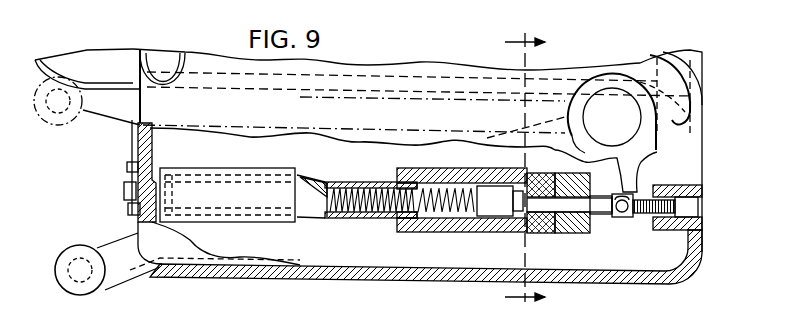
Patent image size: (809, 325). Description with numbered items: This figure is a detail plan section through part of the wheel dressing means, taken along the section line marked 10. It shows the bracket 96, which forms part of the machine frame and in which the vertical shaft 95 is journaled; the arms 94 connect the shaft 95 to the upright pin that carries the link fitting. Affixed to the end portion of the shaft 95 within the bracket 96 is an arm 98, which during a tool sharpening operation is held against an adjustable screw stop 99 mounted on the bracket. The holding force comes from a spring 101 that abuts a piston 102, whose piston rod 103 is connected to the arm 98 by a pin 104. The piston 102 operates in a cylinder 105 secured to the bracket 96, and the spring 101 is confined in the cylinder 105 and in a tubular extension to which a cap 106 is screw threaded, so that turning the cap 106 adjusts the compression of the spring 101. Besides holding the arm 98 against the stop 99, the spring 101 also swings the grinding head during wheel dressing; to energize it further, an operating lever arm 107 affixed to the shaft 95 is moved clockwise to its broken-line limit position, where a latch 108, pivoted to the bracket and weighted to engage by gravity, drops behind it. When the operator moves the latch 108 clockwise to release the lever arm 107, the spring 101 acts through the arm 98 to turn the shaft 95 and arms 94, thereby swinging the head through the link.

The section line 10- 10 is at (525, 166).
The arms 94 is at (660, 152).
The vertical shaft 95 is at (627, 122).
The bracket 96 is at (418, 271).
The arm 98 is at (620, 213).
The adjustable screw stop 99 is at (656, 225).
The spring 101 is at (376, 218).
The piston 102 is at (497, 200).
The piston rod 103 is at (600, 208).
The pin 104 is at (632, 214).
The cylinder 105 is at (442, 222).
The cap 106 is at (212, 168).
The operating lever arm 107 is at (128, 110).
The latch 108 is at (128, 166).